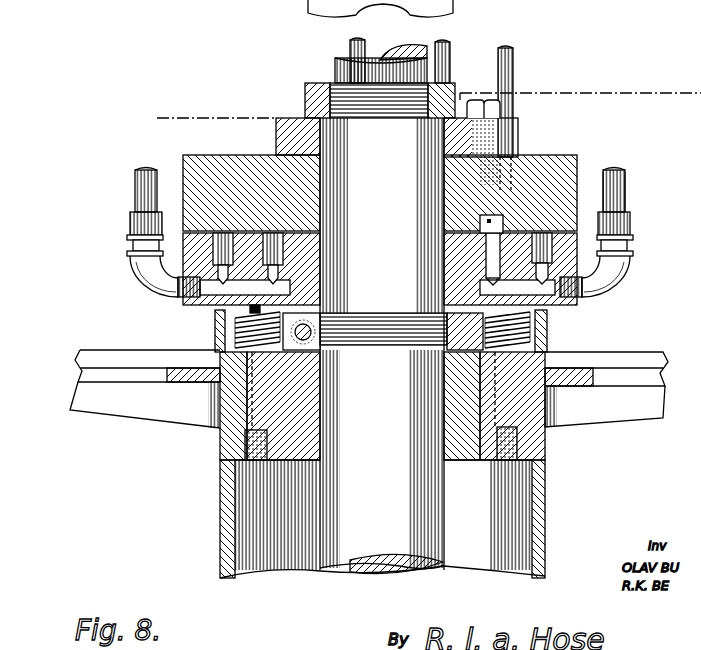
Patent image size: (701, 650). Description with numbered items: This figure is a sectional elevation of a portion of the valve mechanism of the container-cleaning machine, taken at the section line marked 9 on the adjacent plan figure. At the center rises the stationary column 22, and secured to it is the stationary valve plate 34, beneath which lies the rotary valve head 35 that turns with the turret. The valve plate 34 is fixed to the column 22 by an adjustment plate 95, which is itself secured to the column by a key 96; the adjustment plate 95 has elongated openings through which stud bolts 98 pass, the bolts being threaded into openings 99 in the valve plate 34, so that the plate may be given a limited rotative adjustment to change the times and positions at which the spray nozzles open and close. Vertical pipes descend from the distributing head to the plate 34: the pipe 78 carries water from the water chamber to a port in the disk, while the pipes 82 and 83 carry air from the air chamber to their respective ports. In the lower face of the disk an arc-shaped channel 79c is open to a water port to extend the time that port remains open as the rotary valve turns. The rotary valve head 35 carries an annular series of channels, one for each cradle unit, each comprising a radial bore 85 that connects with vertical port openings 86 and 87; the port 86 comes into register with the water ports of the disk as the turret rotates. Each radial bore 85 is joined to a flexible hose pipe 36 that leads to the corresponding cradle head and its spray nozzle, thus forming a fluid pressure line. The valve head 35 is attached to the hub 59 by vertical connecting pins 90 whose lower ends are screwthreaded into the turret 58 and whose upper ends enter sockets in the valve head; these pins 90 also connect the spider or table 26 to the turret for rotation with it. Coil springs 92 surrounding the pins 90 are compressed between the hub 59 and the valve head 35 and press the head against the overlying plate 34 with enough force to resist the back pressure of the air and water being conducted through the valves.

The section line 9- 9 is at (172, 132).
The central stationary column 22 is at (350, 560).
The spider or table 26 is at (633, 363).
The stationary valve plate 34 is at (560, 167).
The rotary valve head 35 is at (580, 286).
The hose pipe 36 is at (628, 186).
The turret 58 is at (222, 492).
The hub 59 is at (233, 402).
The pipe 78 is at (450, 58).
The channel 79c is at (480, 221).
The pipe 82 is at (350, 46).
The pipe 83 is at (513, 77).
The radial bore 85 is at (210, 290).
The vertical port opening 86 is at (273, 250).
The vertical port opening 87 is at (213, 250).
The connecting rod or pin 90 is at (552, 428).
The coil spring 92 is at (530, 348).
The adjustment plate 95 is at (303, 116).
The key 96 is at (322, 135).
The stud bolt 98 is at (490, 109).
The opening 99 is at (492, 178).